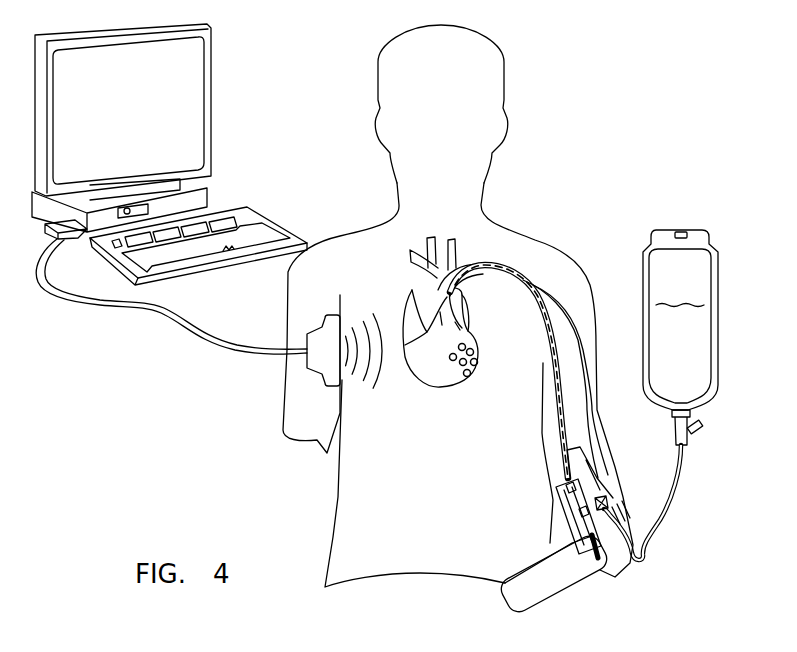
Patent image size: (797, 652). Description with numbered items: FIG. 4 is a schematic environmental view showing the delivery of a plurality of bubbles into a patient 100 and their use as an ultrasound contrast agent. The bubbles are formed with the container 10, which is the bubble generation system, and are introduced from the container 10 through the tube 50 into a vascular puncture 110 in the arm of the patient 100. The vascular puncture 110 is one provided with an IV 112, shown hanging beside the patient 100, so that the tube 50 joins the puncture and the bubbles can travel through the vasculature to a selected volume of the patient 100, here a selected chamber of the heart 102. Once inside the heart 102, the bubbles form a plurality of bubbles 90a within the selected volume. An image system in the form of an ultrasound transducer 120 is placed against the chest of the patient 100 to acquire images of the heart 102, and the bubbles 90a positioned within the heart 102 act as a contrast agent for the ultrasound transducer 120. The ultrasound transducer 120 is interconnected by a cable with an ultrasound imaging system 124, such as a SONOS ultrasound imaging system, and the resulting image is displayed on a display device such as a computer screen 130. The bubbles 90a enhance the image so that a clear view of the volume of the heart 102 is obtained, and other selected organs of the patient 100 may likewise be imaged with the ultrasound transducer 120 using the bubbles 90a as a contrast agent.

The patient 100 is at (592, 67).
The computer screen 130 is at (180, 103).
The ultrasound imaging system 124 is at (64, 243).
The ultrasound transducer 120 is at (307, 362).
The heart 102 is at (394, 296).
The plurality of bubbles 90a is at (457, 366).
The vascular puncture 110 is at (560, 487).
The tube 50 is at (602, 513).
The IV 112 is at (690, 226).
The container 10 is at (590, 586).